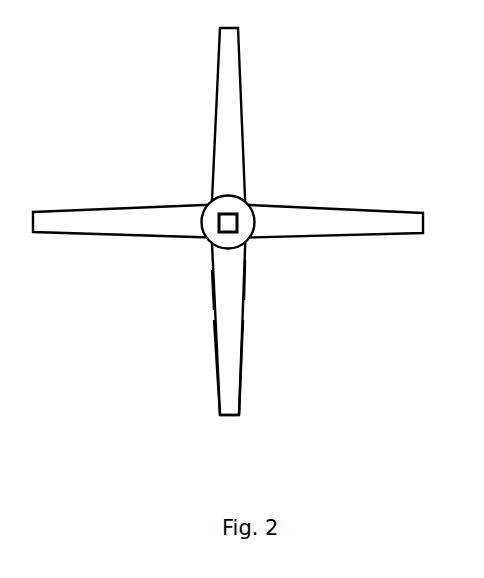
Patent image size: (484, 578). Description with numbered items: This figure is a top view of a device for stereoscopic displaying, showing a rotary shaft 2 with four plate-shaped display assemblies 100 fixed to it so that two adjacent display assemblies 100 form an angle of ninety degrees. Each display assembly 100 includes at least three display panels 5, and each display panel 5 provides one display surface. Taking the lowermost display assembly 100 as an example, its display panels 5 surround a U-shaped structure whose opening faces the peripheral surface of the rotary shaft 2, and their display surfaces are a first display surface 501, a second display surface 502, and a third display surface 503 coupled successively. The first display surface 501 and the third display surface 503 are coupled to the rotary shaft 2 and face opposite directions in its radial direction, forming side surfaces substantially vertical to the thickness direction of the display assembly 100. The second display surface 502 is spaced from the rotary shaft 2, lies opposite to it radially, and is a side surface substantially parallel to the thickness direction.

The rotary shaft 2 is at (207, 205).
The display assembly 100 is at (101, 208).
The display panel 5 is at (215, 340).
The first display surface 501 is at (211, 290).
The second display surface 502 is at (222, 417).
The third display surface 503 is at (245, 280).